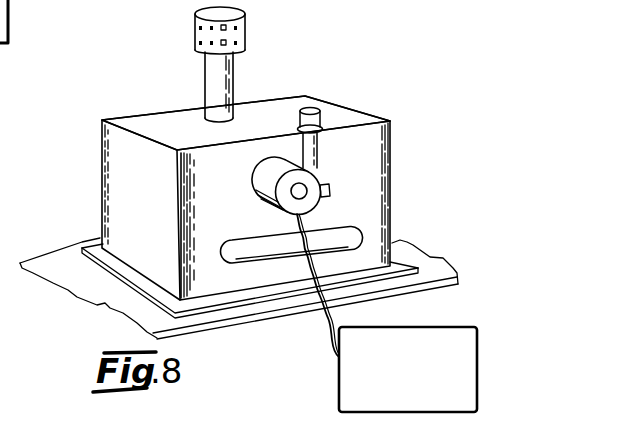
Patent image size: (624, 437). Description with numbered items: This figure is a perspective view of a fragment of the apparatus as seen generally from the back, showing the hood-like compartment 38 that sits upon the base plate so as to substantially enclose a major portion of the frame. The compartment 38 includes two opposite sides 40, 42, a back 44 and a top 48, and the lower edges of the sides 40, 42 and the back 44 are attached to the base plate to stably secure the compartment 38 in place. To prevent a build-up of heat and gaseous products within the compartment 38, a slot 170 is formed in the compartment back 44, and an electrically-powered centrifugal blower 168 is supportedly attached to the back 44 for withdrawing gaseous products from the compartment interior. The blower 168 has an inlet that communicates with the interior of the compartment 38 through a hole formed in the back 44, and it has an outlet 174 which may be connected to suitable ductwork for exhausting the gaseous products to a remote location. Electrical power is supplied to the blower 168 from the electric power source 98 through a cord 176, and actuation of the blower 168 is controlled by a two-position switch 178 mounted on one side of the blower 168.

The hood-like compartment 38 is at (182, 128).
The compartment side 40 is at (392, 147).
The compartment side 42 is at (127, 191).
The compartment back 44 is at (372, 182).
The compartment top 48 is at (268, 108).
The electric power source 98 is at (478, 373).
The centrifugal blower 168 is at (262, 198).
The slot 170 is at (356, 233).
The blower outlet 174 is at (312, 109).
The cord 176 is at (311, 325).
The two-position switch 178 is at (328, 191).